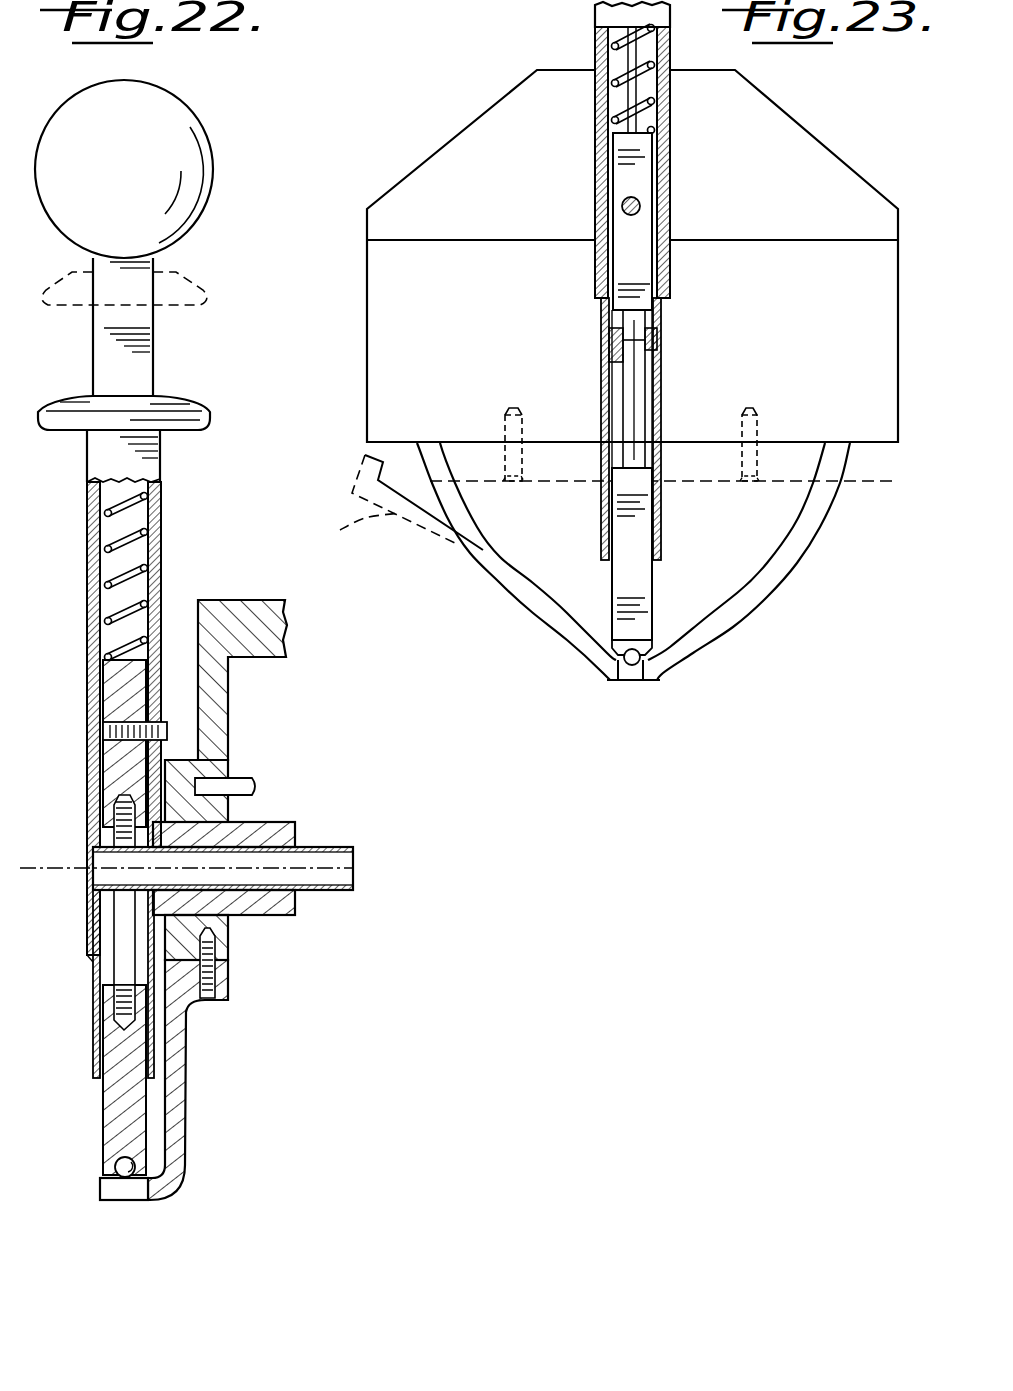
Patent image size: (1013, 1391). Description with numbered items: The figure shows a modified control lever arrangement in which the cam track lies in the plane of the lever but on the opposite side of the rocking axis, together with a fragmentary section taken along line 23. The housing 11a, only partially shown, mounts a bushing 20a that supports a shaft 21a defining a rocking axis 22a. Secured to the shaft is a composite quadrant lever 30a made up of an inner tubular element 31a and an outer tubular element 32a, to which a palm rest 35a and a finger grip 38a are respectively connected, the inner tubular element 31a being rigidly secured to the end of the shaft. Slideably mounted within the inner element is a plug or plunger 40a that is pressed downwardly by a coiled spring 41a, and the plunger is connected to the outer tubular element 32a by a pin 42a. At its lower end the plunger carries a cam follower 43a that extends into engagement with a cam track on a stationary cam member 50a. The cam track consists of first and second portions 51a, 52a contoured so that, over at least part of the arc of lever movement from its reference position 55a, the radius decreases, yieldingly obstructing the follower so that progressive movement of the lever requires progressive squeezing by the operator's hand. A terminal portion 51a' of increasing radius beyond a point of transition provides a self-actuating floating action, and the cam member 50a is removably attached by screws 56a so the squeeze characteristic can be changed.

In FIG. 22, the housing 11a is at (248, 600).
In FIG. 23, the housing 11a is at (812, 132).
In FIG. 22, the bushing 20a is at (280, 916).
In FIG. 22, the shaft 21a is at (305, 833).
In FIG. 23, the shaft 21a is at (612, 366).
In FIG. 22, the rocking axis 22a is at (362, 866).
In FIG. 23, the rocking axis 22a is at (649, 342).
In FIG. 22, the section line 23 is at (146, 595).
In FIG. 22, the composite quadrant lever 30a is at (156, 352).
In FIG. 22, the inner tubular element 31a is at (158, 518).
In FIG. 23, the inner tubular element 31a is at (665, 169).
In FIG. 22, the outer tubular element 32a is at (160, 463).
In FIG. 23, the outer tubular element 32a is at (600, 16).
In FIG. 22, the palm rest 35a is at (195, 130).
In FIG. 22, the finger grip 38a is at (192, 405).
In FIG. 22, the plug or plunger 40a is at (118, 679).
In FIG. 23, the plug or plunger 40a is at (622, 184).
In FIG. 22, the coiled spring 41a is at (140, 566).
In FIG. 23, the coiled spring 41a is at (612, 106).
In FIG. 22, the pin 42a is at (108, 729).
In FIG. 23, the pin 42a is at (642, 206).
In FIG. 22, the cam follower 43a is at (113, 1168).
In FIG. 23, the cam follower 43a is at (630, 676).
In FIG. 22, the stationary cam member 50a is at (186, 1126).
In FIG. 23, the stationary cam member 50a is at (537, 583).
In FIG. 23, the first portion of cam track 51a is at (529, 655).
In FIG. 23, the terminal portion of cam track 51a' is at (399, 504).
In FIG. 23, the second portion of cam track 52a is at (722, 589).
In FIG. 22, the reference position 55a is at (140, 1198).
In FIG. 23, the reference position 55a is at (636, 685).
In FIG. 22, the screws 56a is at (212, 1006).
In FIG. 23, the screws 56a is at (513, 485).